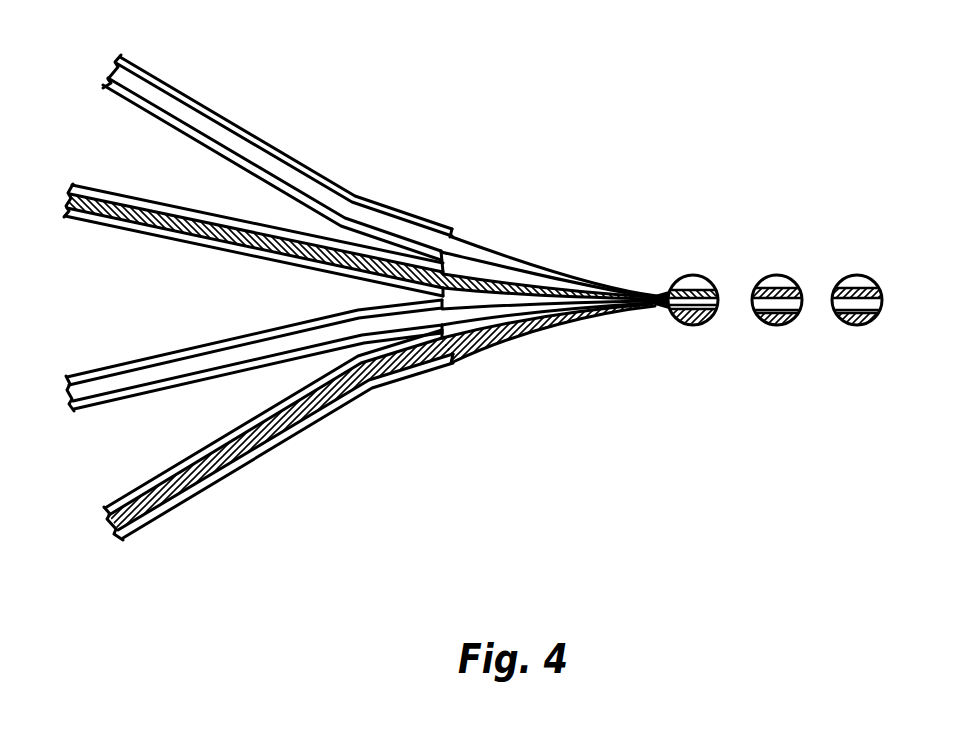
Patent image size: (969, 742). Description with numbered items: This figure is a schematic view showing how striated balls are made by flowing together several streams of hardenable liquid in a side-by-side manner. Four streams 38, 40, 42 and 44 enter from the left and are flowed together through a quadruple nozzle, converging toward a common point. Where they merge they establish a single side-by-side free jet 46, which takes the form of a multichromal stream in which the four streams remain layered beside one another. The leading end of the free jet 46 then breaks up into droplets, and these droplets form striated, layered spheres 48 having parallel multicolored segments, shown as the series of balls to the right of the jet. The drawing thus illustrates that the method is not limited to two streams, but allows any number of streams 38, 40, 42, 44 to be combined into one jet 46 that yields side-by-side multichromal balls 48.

The stream 38 is at (237, 150).
The stream 40 is at (123, 196).
The stream 42 is at (140, 358).
The stream 44 is at (155, 483).
The side-by-side free jet 46 is at (584, 279).
The striated, layered spheres 48 is at (773, 276).